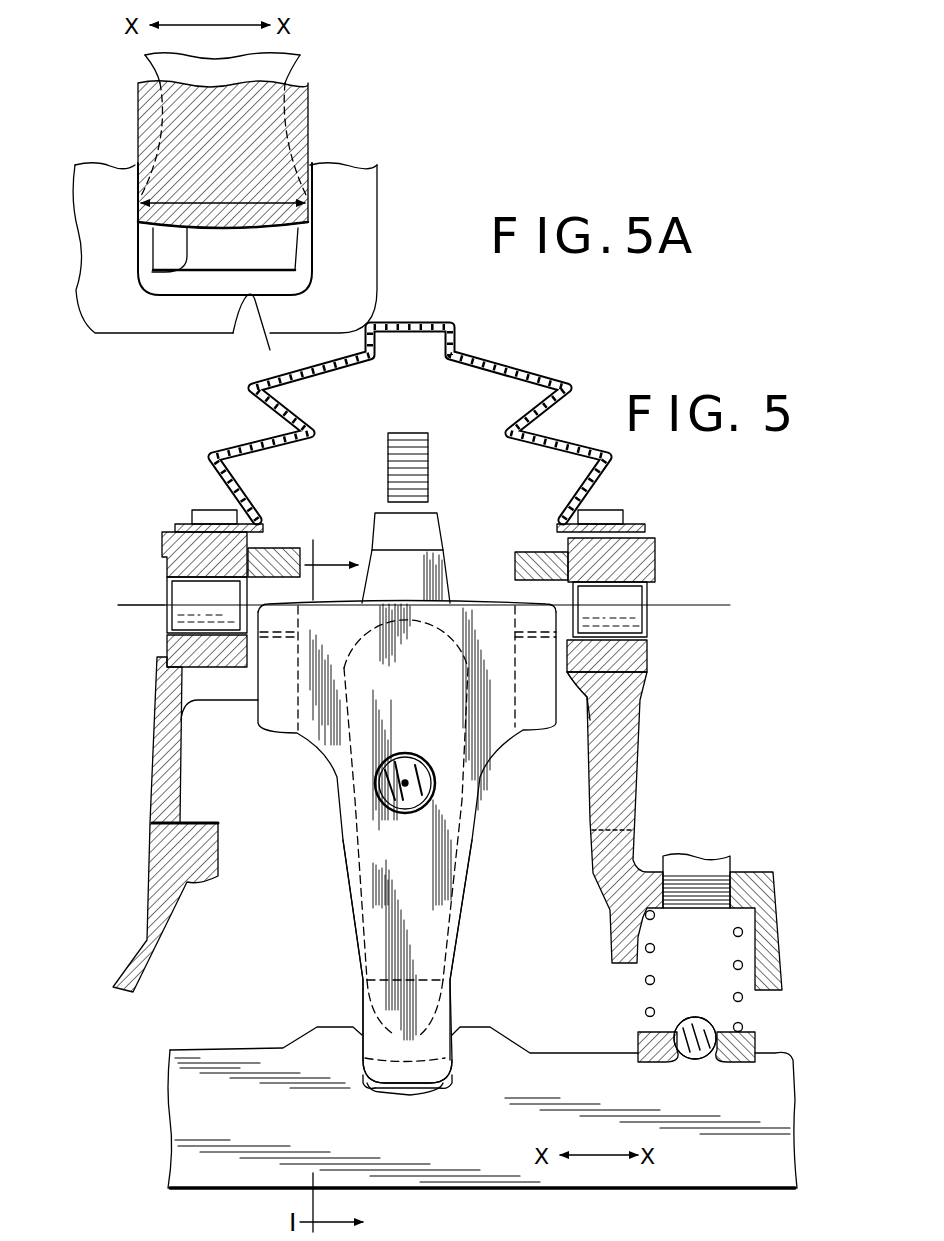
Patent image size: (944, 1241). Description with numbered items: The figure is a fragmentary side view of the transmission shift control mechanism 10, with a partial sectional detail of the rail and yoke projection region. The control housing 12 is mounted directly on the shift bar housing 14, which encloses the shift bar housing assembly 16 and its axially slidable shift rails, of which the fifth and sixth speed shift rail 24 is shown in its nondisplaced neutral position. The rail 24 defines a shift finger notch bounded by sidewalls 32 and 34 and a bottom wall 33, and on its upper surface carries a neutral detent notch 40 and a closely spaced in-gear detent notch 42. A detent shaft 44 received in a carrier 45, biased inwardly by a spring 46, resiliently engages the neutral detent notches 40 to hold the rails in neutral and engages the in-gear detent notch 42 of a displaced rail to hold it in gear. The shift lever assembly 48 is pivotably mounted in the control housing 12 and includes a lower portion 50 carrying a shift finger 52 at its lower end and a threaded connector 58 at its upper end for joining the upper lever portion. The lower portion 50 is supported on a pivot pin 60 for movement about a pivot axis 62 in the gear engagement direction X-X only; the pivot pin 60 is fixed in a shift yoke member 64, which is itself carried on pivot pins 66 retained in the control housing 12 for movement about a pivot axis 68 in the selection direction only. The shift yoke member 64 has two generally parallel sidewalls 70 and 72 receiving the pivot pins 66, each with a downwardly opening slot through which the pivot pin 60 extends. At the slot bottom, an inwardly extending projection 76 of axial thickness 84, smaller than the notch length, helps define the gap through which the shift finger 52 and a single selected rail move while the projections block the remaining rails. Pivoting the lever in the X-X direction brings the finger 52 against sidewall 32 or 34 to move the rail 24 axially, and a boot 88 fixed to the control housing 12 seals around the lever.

In FIG. 5, the transmission shift control mechanism 10 is at (583, 362).
In FIG. 5, the control housing 12 is at (615, 736).
In FIG. 5, the shift bar housing 14 is at (158, 853).
In FIG. 5, the shift bar housing assembly 16 is at (150, 1060).
In FIG. 5A, the shift rail 24 is at (350, 245).
In FIG. 5, the shift rail 24 is at (190, 1120).
In FIG. 5, the sidewall 32 is at (445, 1088).
In FIG. 5A, the bottom wall 33 is at (268, 333).
In FIG. 5, the bottom wall 33 is at (412, 1092).
In FIG. 5, the sidewall 34 is at (368, 1088).
In FIG. 5, the neutral detent notch 40 is at (700, 1060).
In FIG. 5, the in-gear detent notch 42 is at (628, 1062).
In FIG. 5, the detent shaft 44 is at (708, 1020).
In FIG. 5, the carrier 45 is at (752, 1052).
In FIG. 5, the spring 46 is at (732, 932).
In FIG. 5, the shift lever assembly 48 is at (348, 535).
In FIG. 5A, the lower portion 50 is at (158, 63).
In FIG. 5, the lower portion 50 is at (350, 745).
In FIG. 5A, the shift finger 52 is at (150, 240).
In FIG. 5, the shift finger 52 is at (370, 1010).
In FIG. 5, the threaded connector 58 is at (422, 484).
In FIG. 5, the pivot pin 60 is at (432, 773).
In FIG. 5, the pivot axis 62 is at (410, 786).
In FIG. 5, the shift yoke member 64 is at (320, 797).
In FIG. 5, the pivot pins 66 is at (175, 593).
In FIG. 5, the pivot axis 68 is at (143, 606).
In FIG. 5, the sidewall 70 is at (165, 708).
In FIG. 5, the sidewall 72 is at (618, 700).
In FIG. 5A, the inwardly extending projection 76 is at (150, 138).
In FIG. 5, the inwardly extending projection 76 is at (445, 1006).
In FIG. 5A, the axial thickness 84 is at (165, 273).
In FIG. 5, the boot 88 is at (212, 468).